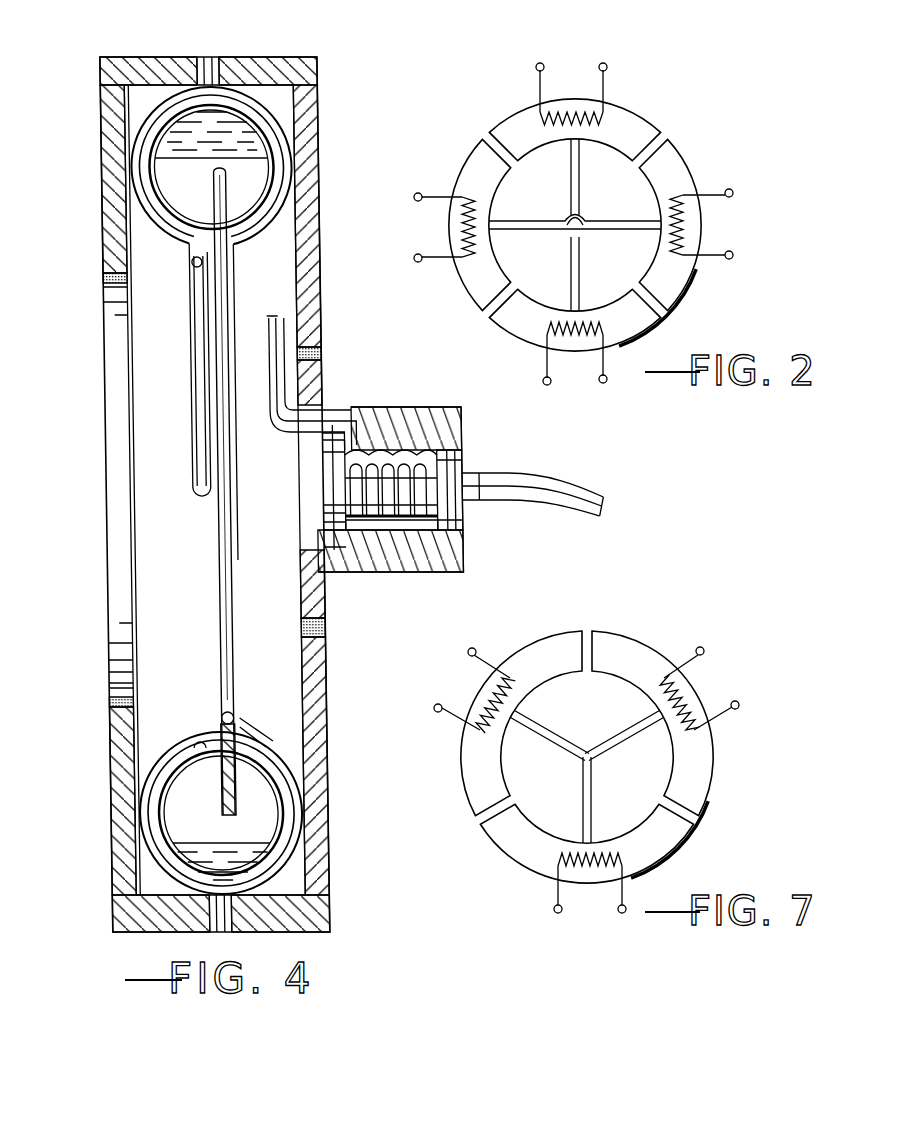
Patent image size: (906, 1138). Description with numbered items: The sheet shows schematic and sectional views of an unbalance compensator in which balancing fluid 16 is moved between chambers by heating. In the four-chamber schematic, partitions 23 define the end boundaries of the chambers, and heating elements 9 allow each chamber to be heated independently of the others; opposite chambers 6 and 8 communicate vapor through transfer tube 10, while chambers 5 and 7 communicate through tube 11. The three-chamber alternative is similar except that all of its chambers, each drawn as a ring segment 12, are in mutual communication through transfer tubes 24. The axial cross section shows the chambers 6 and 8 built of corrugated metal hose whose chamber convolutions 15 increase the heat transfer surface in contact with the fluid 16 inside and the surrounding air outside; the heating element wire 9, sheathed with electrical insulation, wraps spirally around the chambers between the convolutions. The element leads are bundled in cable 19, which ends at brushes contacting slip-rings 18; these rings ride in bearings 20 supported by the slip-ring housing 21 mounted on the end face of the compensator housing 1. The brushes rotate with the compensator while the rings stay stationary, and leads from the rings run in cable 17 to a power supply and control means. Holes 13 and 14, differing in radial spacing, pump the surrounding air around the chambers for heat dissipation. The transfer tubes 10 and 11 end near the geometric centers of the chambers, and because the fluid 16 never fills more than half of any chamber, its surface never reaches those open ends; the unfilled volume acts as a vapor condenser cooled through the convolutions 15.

In FIG. 4, the compensator housing 1 is at (148, 60).
In FIG. 2, the chamber 5 is at (470, 160).
In FIG. 4, the chamber 6 is at (145, 218).
In FIG. 2, the chamber 6 is at (632, 125).
In FIG. 2, the chamber 7 is at (670, 170).
In FIG. 4, the chamber 8 is at (179, 755).
In FIG. 2, the chamber 8 is at (520, 320).
In FIG. 4, the heating element 9 is at (268, 135).
In FIG. 2, the heating element 9 is at (572, 108).
In FIG. 7, the heating element 9 is at (490, 700).
In FIG. 4, the transfer tube 10 is at (211, 584).
In FIG. 2, the transfer tube 10 is at (570, 260).
In FIG. 4, the transfer tube 11 is at (192, 393).
In FIG. 2, the transfer tube 11 is at (597, 222).
In FIG. 7, the ring segment 12 is at (625, 648).
In FIG. 4, the hole 13 is at (295, 353).
In FIG. 4, the hole 14 is at (212, 58).
In FIG. 4, the chamber convolutions 15 is at (130, 178).
In FIG. 4, the balancing fluid 16 is at (173, 142).
In FIG. 4, the cable 17 is at (578, 478).
In FIG. 4, the slip-rings 18 is at (362, 512).
In FIG. 4, the cable 19 is at (278, 330).
In FIG. 4, the bearings 20 is at (315, 490).
In FIG. 4, the slip-ring housing 21 is at (437, 554).
In FIG. 2, the partitions 23 is at (663, 318).
In FIG. 7, the partitions 23 is at (695, 818).
In FIG. 7, the transfer tubes 24 is at (583, 790).